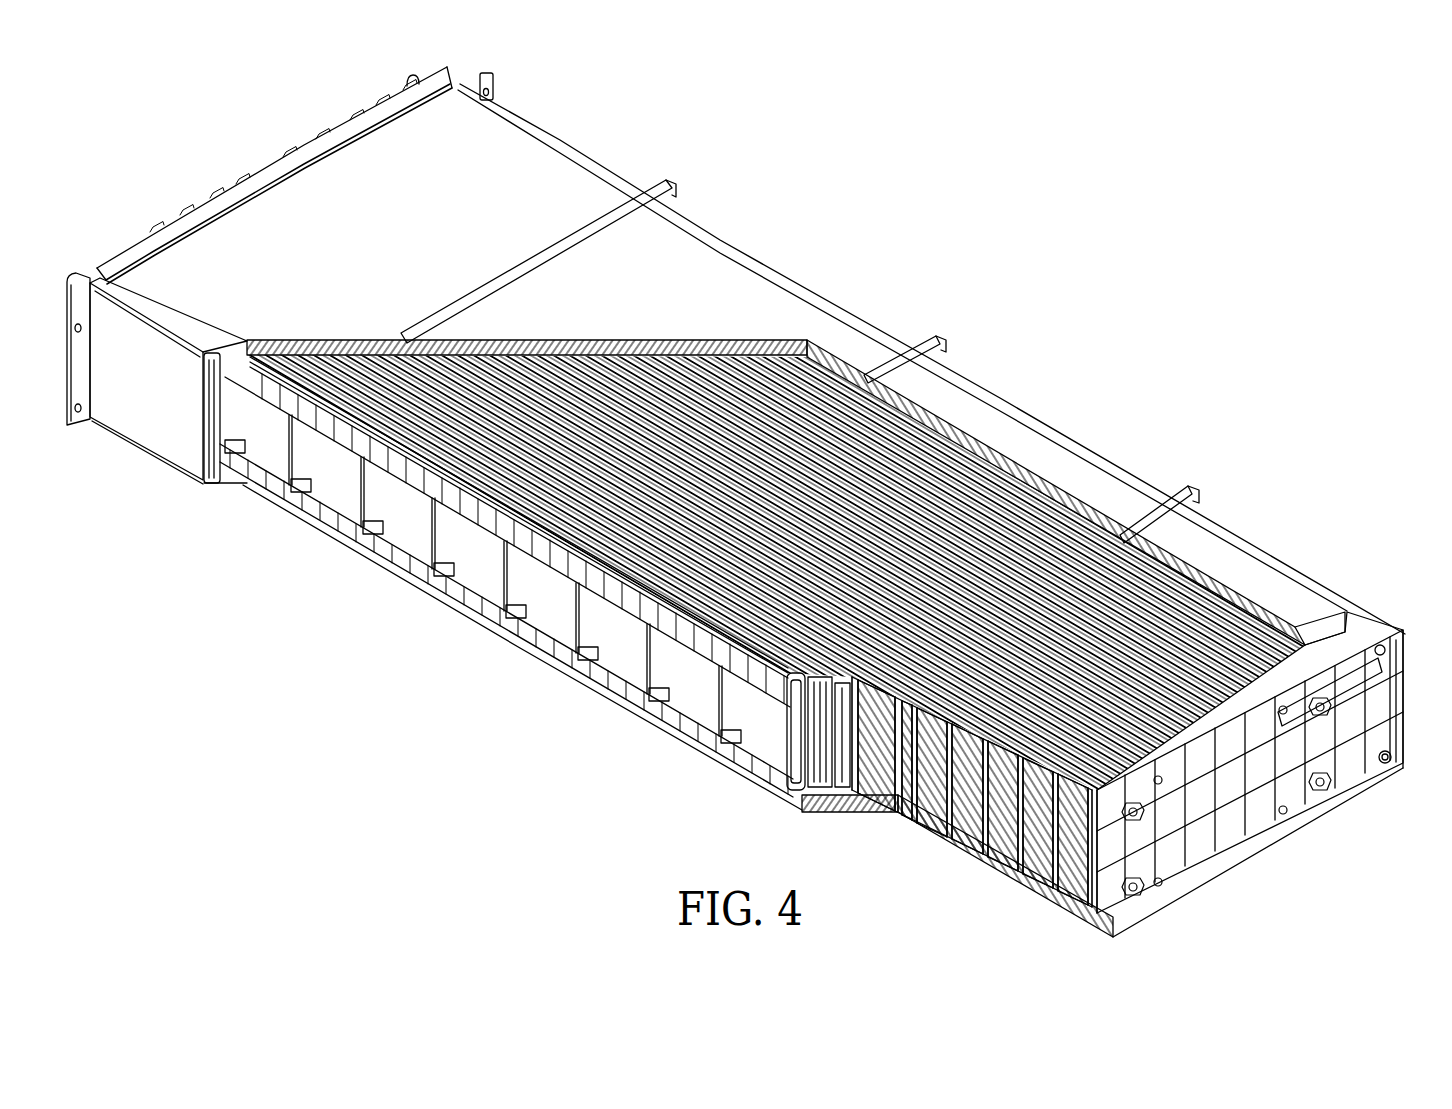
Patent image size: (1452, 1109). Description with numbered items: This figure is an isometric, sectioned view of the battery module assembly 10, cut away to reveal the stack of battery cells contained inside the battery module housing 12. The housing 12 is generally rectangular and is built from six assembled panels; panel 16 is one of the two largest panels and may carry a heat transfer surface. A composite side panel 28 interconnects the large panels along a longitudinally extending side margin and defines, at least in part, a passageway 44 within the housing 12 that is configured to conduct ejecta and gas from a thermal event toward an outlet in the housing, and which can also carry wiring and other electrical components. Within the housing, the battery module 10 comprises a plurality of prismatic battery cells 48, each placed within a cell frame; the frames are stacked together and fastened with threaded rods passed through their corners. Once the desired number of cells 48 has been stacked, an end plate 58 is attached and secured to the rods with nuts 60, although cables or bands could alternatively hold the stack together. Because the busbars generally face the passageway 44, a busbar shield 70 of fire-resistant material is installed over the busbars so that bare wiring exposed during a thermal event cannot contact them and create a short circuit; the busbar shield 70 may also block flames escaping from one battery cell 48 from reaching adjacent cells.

The battery module assembly 10 is at (1030, 238).
The battery module housing 12 is at (608, 153).
The panel 16 is at (1064, 446).
The composite side panel 28 is at (140, 427).
The passageway 44 is at (1392, 722).
The battery cell 48 is at (992, 826).
The end plate 58 is at (1220, 838).
The nut 60 is at (1385, 764).
The busbar shield 70 is at (760, 722).